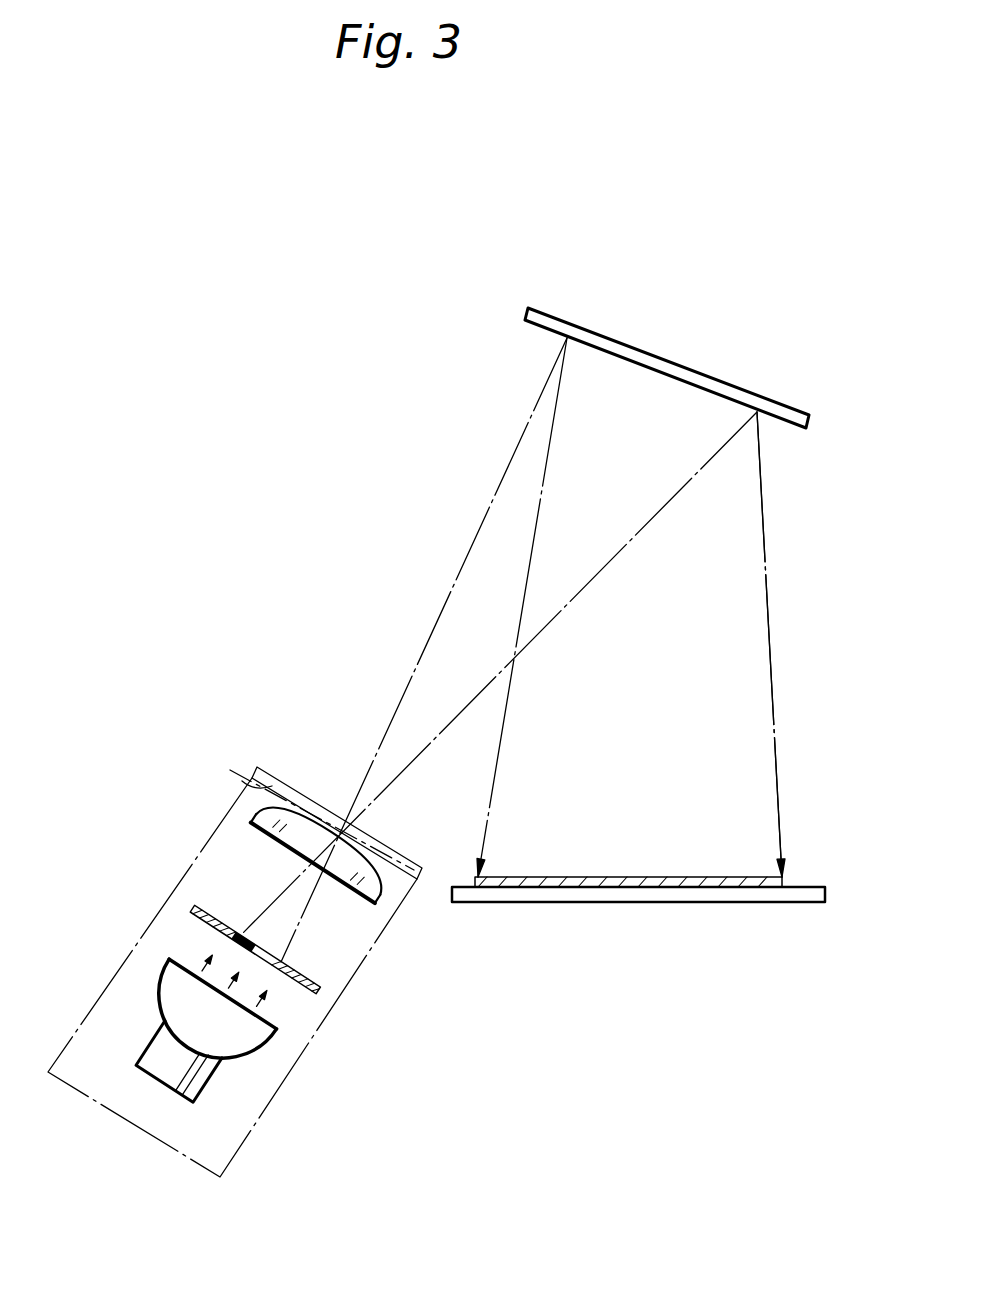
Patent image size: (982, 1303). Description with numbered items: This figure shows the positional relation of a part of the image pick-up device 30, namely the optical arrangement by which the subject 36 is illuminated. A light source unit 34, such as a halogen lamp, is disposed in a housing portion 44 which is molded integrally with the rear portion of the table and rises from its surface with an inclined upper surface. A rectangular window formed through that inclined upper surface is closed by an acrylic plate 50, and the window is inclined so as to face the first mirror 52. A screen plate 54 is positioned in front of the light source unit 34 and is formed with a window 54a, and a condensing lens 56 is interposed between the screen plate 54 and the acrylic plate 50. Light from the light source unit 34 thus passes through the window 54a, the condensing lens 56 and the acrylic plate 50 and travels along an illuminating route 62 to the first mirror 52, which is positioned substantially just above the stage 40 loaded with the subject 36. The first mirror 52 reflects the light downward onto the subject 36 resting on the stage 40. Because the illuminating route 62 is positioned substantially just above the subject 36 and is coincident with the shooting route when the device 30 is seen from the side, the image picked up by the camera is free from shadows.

The image pick-up device 30 is at (336, 471).
The light source unit 34 is at (245, 1033).
The subject 36 is at (708, 876).
The stage 40 is at (826, 876).
The housing portion 44 is at (165, 862).
The acrylic plate 50 is at (226, 758).
The first mirror 52 is at (813, 424).
The screen plate 54 is at (321, 991).
The window 54a is at (270, 946).
The condensing lens 56 is at (382, 897).
The illuminating route 62 is at (766, 555).